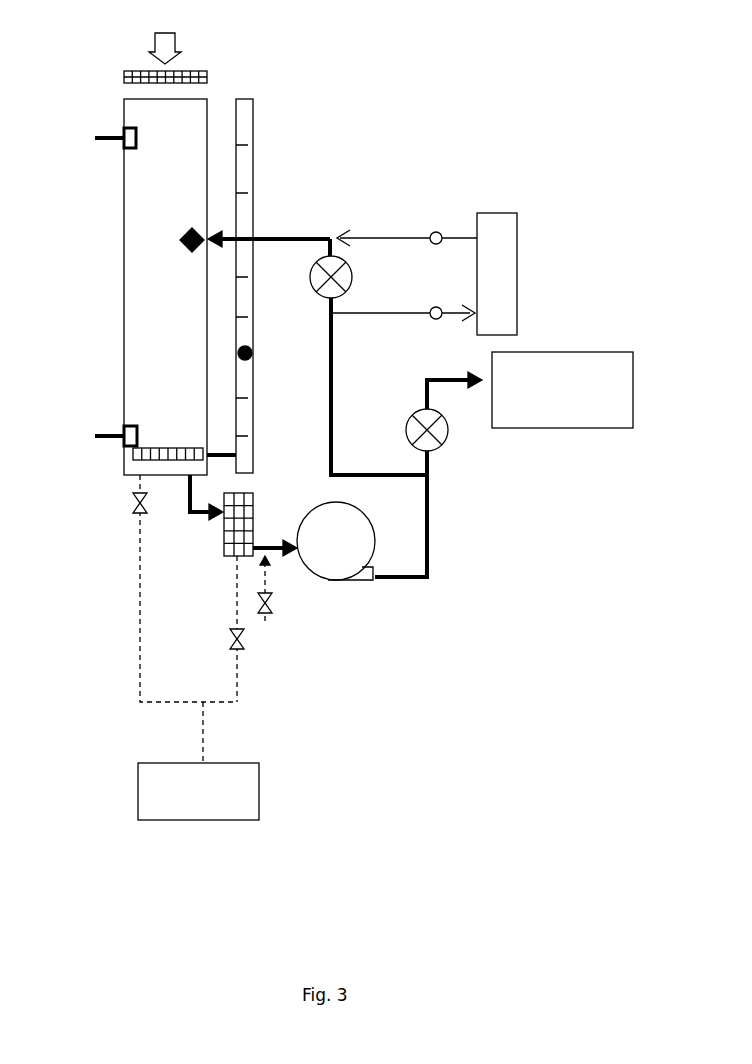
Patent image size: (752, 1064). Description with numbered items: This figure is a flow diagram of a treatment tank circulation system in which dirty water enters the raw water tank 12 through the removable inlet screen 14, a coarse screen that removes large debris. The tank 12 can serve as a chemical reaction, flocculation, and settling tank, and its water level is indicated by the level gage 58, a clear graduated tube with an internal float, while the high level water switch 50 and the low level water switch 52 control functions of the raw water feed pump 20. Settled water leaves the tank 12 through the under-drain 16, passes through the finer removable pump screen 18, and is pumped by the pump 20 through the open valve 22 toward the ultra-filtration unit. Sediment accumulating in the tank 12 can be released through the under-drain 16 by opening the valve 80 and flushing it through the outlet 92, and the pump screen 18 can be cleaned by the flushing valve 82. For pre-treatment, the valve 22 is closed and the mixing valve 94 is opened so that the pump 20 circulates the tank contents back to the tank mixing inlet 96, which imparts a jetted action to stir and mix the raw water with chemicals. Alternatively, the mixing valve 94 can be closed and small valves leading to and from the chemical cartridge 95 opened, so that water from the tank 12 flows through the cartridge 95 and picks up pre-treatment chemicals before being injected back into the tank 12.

The raw water tank 12 is at (165, 254).
The removable inlet screen 14 is at (205, 75).
The under-drain 16 is at (137, 458).
The pump screen 18 is at (250, 507).
The raw water feed pump 20 is at (336, 541).
The valve 22 is at (447, 440).
The high level water switch 50 is at (124, 136).
The low level water switch 52 is at (98, 436).
The level gage 58 is at (253, 188).
The valve 80 is at (135, 508).
The flushing valve 82 is at (240, 640).
The outlet 92 is at (198, 761).
The mixing valve 94 is at (353, 282).
The chemical cartridge 95 is at (502, 255).
The tank mixing inlet 96 is at (185, 236).